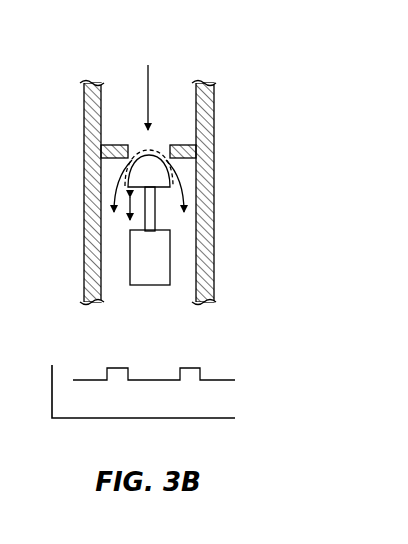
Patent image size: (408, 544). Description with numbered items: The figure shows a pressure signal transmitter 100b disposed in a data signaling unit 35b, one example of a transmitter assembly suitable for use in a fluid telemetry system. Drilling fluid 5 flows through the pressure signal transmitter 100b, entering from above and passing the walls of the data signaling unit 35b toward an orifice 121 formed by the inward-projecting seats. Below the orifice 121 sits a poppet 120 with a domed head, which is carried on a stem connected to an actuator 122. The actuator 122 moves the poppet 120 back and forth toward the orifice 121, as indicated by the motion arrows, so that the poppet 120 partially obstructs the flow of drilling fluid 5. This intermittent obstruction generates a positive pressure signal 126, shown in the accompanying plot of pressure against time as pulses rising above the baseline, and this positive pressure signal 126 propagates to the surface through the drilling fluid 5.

The pressure signal transmitter 100b is at (182, 38).
The data signaling unit 35b is at (83, 110).
The orifice 121 is at (108, 152).
The drilling fluid 5 is at (148, 78).
The poppet 120 is at (170, 188).
The actuator 122 is at (170, 253).
The positive pressure signal 126 is at (115, 368).